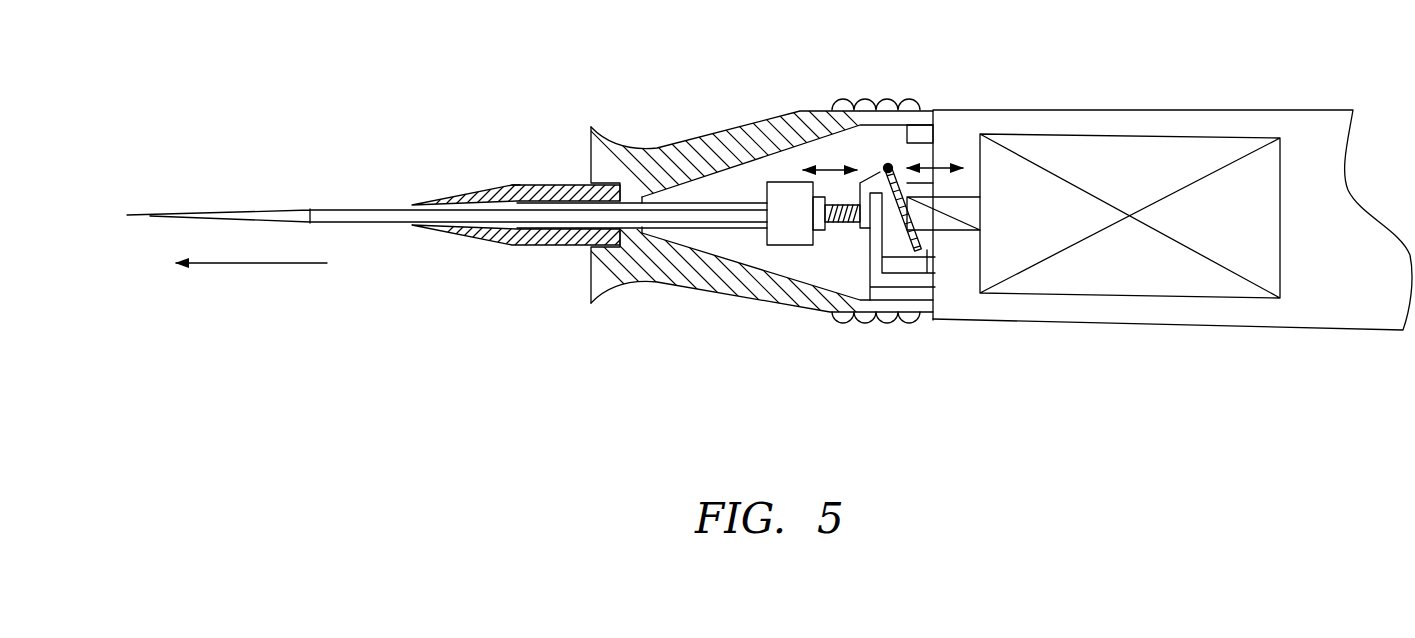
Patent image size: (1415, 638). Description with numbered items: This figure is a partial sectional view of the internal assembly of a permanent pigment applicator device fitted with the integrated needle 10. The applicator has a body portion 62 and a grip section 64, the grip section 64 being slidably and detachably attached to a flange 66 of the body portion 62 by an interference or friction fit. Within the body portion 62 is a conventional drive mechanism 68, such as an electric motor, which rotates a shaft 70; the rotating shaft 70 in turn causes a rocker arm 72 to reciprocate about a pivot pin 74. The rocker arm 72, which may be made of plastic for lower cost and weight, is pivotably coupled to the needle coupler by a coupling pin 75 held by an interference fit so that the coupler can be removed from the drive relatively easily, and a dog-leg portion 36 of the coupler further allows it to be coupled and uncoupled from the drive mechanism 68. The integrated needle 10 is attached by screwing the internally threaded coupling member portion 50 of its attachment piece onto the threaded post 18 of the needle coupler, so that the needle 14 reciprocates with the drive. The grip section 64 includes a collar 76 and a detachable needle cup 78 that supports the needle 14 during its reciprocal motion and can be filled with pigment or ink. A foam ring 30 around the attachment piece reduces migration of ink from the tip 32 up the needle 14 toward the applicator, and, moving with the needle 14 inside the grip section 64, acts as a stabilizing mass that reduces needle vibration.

The integrated needle 10 is at (711, 188).
The needle 14 is at (350, 215).
The threaded post 18 is at (851, 222).
The foam ring 30 is at (760, 234).
The tip 32 is at (162, 223).
The dog-leg portion 36 is at (877, 152).
The coupling member portion 50 is at (830, 226).
The body portion 62 is at (1128, 120).
The grip section 64 is at (730, 150).
The flange 66 is at (920, 133).
The drive mechanism 68 is at (1140, 270).
The shaft 70 is at (980, 212).
The rocker arm 72 is at (905, 268).
The pivot pin 74 is at (866, 262).
The coupling pin 75 is at (888, 162).
The collar 76 is at (560, 190).
The detachable needle cup 78 is at (508, 187).